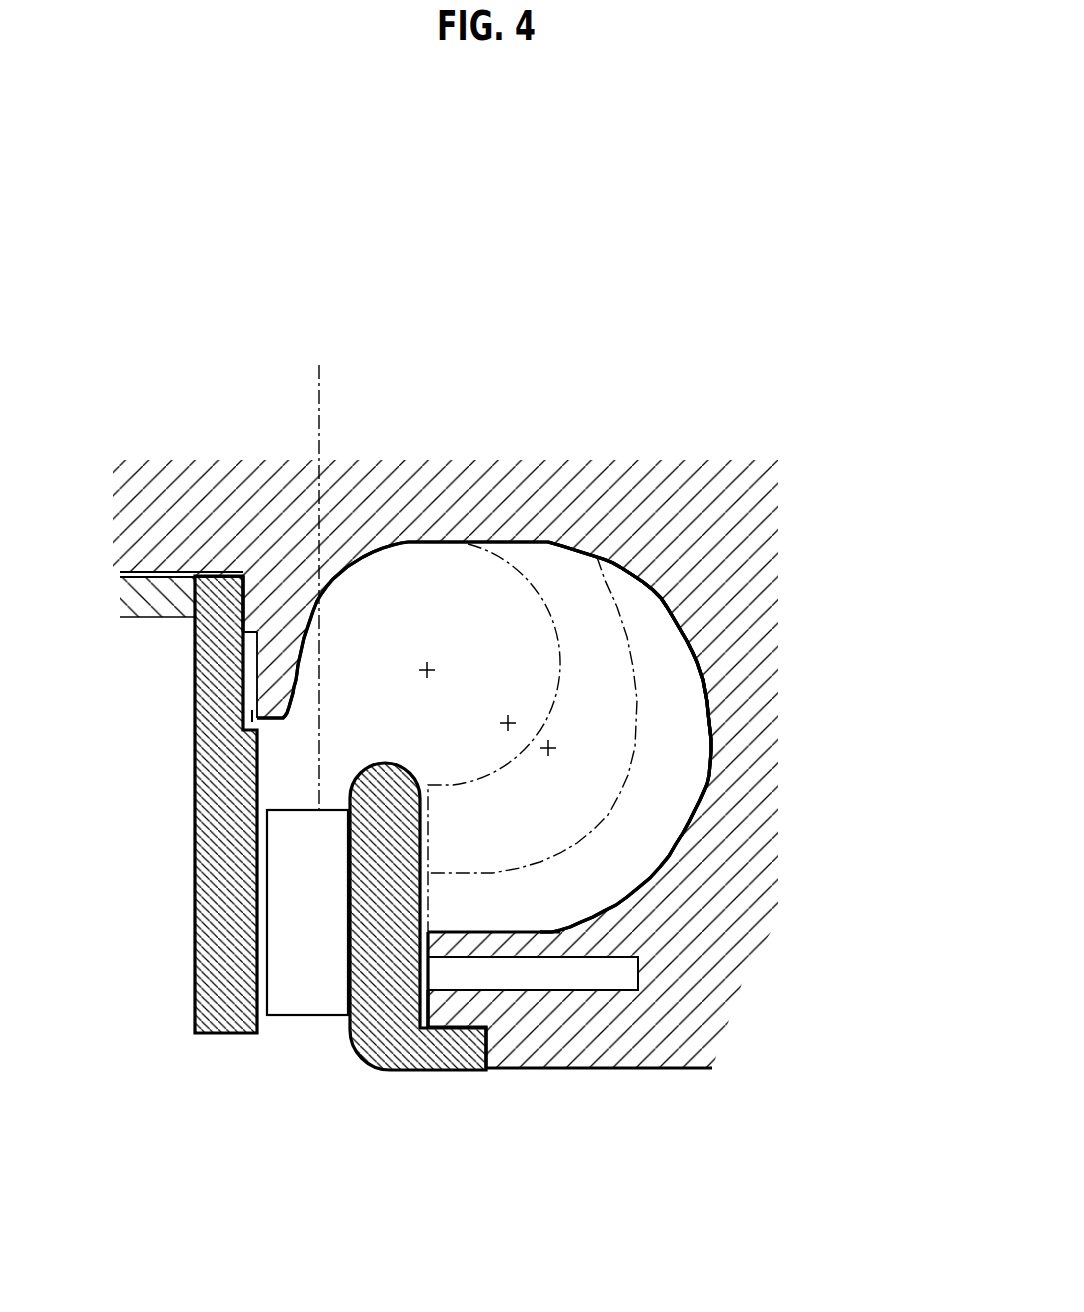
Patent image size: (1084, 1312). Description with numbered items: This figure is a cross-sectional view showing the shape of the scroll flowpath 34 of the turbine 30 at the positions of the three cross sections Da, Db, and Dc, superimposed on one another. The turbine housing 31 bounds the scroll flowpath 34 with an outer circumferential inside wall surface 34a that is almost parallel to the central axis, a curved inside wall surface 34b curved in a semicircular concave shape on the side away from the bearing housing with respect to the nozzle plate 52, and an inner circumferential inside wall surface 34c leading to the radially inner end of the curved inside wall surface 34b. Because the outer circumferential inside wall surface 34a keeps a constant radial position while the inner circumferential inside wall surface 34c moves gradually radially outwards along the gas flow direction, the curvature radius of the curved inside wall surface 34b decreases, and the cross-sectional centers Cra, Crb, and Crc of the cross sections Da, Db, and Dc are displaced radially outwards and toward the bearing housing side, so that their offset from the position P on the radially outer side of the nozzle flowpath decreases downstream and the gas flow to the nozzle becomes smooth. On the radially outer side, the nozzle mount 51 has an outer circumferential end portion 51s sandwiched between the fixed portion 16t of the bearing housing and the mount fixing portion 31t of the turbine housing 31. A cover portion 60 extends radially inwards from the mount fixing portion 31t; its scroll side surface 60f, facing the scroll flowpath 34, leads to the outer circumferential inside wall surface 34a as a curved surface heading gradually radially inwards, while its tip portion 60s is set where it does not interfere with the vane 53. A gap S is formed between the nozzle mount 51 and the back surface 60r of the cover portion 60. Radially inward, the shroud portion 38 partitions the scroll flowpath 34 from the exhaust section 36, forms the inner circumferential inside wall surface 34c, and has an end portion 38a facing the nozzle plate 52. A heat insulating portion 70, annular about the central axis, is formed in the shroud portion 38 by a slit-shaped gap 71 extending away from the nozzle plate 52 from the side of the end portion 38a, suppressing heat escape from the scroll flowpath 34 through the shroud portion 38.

The outer circumferential end portion 51s is at (165, 466).
The nozzle mount 51 is at (171, 710).
The mount fixing portion 31t is at (229, 481).
The position P is at (316, 570).
The cover portion 60 is at (318, 511).
The outer circumferential inside wall surface 34a is at (473, 435).
The turbine 30 is at (597, 395).
The cross section Dc is at (494, 636).
The cross section Db is at (555, 595).
The cross section Da is at (702, 552).
The turbine housing 31 is at (516, 764).
The scroll flowpath 34 is at (733, 737).
The curved inside wall surface 34b is at (696, 717).
The cross-sectional center Crc is at (385, 653).
The scroll side surface 60f is at (348, 630).
The tip portion 60s is at (325, 741).
The inner circumferential inside wall surface 34c is at (778, 932).
The cross-sectional center Crb is at (527, 780).
The cross-sectional center Cra is at (601, 788).
The exhaust section 36 is at (705, 1070).
The fixed portion 16t is at (128, 662).
The back surface 60r is at (170, 732).
The gap S is at (182, 771).
The vane 53 is at (274, 981).
The nozzle plate 52 is at (384, 955).
The end portion 38a is at (401, 1106).
The gap 71 is at (567, 990).
The shroud portion 38 is at (509, 1074).
The heat insulating portion 70 is at (558, 1064).